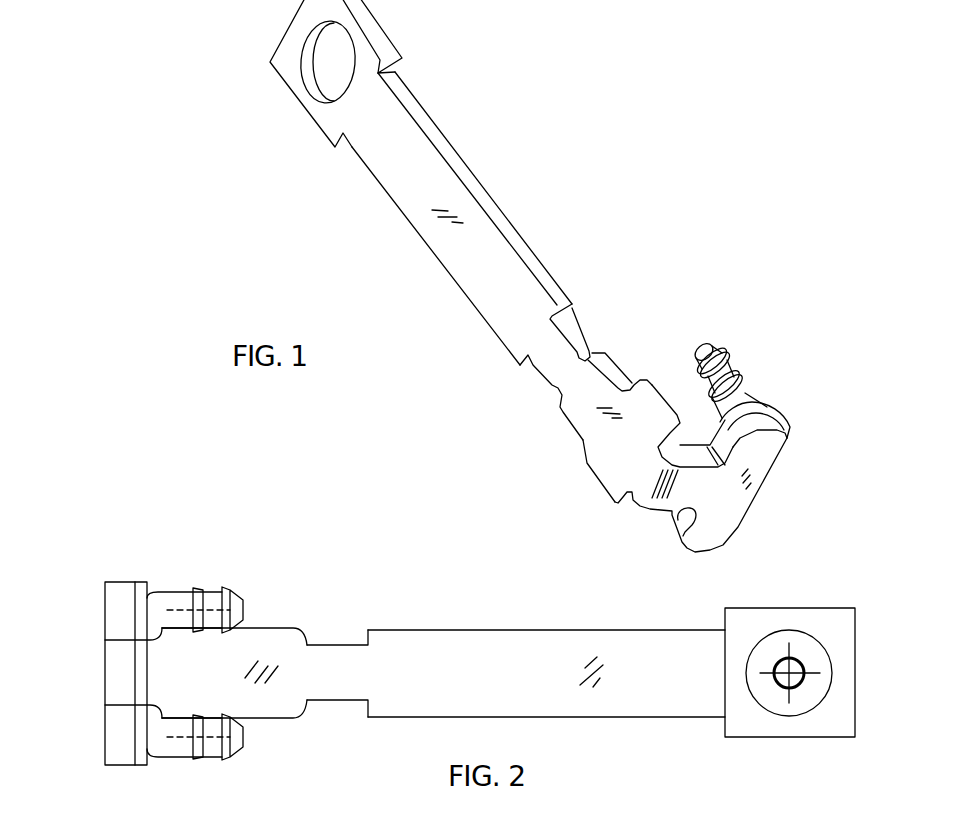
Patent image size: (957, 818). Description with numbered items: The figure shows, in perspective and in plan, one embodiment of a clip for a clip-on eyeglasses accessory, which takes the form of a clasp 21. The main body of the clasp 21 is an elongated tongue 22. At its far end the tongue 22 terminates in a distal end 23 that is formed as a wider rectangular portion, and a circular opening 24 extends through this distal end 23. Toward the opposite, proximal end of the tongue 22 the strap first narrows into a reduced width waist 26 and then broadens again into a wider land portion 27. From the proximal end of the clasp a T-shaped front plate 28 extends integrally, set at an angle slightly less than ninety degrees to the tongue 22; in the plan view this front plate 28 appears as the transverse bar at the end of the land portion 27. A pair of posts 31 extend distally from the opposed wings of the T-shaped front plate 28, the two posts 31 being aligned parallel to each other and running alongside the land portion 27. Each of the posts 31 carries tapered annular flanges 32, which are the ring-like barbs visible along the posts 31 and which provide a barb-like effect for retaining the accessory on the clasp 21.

In FIG. 1, the clasp 21 is at (560, 138).
In FIG. 2, the clasp 21 is at (617, 811).
In FIG. 1, the elongated tongue 22 is at (423, 240).
In FIG. 2, the elongated tongue 22 is at (517, 630).
In FIG. 1, the distal end 23 is at (302, 113).
In FIG. 2, the distal end 23 is at (737, 719).
In FIG. 1, the circular opening 24 is at (322, 60).
In FIG. 2, the circular opening 24 is at (782, 708).
In FIG. 1, the reduced width waist 26 is at (538, 383).
In FIG. 2, the reduced width waist 26 is at (322, 638).
In FIG. 1, the wider land portion 27 is at (622, 450).
In FIG. 2, the wider land portion 27 is at (280, 703).
In FIG. 1, the T-shaped front plate 28 is at (732, 508).
In FIG. 2, the T-shaped front plate 28 is at (102, 698).
In FIG. 1, the posts 31 is at (753, 388).
In FIG. 2, the posts 31 is at (175, 590).
In FIG. 1, the tapered annular flanges 32 is at (742, 370).
In FIG. 2, the tapered annular flanges 32 is at (198, 588).